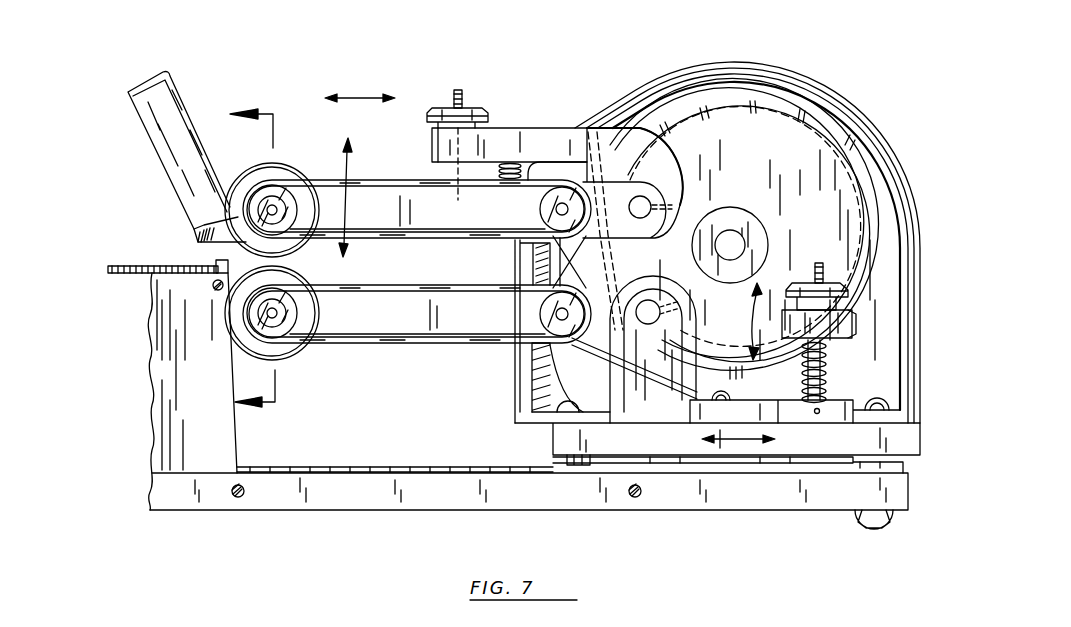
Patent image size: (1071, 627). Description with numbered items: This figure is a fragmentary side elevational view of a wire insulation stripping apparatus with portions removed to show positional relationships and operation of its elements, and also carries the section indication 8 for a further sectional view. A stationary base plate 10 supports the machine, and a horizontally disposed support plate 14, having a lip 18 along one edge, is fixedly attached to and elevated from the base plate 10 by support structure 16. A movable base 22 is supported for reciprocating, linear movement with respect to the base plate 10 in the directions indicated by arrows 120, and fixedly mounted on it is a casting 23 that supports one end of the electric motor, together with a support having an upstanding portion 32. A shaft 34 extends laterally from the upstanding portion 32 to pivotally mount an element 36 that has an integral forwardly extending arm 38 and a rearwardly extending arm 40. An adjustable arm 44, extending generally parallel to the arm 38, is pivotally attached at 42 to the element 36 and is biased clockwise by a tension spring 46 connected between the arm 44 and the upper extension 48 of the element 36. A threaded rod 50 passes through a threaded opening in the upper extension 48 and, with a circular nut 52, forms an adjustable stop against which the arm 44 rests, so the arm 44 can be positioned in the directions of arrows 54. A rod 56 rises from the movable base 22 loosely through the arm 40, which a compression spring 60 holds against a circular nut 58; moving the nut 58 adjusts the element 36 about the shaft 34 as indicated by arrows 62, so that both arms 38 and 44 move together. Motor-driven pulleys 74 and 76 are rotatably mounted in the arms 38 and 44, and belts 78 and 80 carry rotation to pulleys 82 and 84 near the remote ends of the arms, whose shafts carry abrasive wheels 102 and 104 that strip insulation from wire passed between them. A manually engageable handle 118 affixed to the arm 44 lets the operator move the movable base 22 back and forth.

The base plate 10 is at (332, 505).
The support plate 14 is at (132, 265).
The support structure 16 is at (240, 442).
The lip 18 is at (212, 261).
The movable base 22 is at (692, 455).
The casting 23 is at (713, 412).
The upstanding portion 32 is at (630, 386).
The shaft 34 is at (648, 300).
The element 36 is at (672, 237).
The arm 38 is at (425, 327).
The arm 40 is at (850, 325).
The pivotal mounting 42 is at (676, 190).
The adjustable arm 44 is at (397, 200).
The tension spring 46 is at (524, 165).
The upper extension 48 is at (512, 128).
The threaded rod 50 is at (462, 96).
The circular nut 52 is at (438, 105).
The arrows 54 is at (342, 160).
The rod 56 is at (823, 392).
The circular nut 58 is at (845, 285).
The compression spring 60 is at (792, 340).
The arrows 62 is at (773, 270).
The pulley 74 is at (547, 315).
The pulley 76 is at (547, 211).
The belt 78 is at (385, 344).
The belt 80 is at (395, 238).
The pulley 82 is at (300, 316).
The pulley 84 is at (300, 213).
The abrasive wheel 102 is at (260, 352).
The abrasive wheel 104 is at (292, 248).
The handle 118 is at (163, 136).
The arrows 120 is at (743, 445).
The section line 8 is at (252, 261).